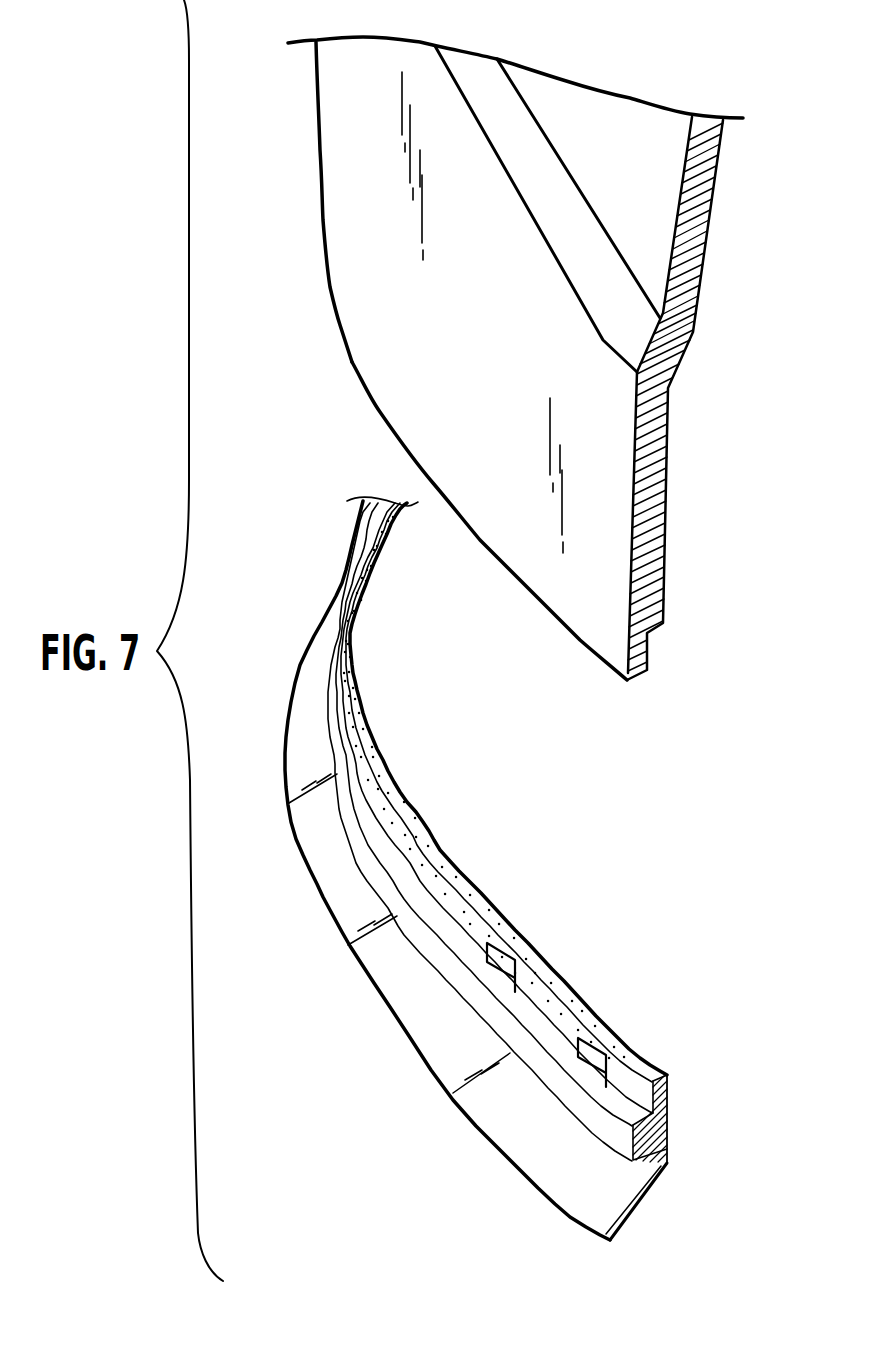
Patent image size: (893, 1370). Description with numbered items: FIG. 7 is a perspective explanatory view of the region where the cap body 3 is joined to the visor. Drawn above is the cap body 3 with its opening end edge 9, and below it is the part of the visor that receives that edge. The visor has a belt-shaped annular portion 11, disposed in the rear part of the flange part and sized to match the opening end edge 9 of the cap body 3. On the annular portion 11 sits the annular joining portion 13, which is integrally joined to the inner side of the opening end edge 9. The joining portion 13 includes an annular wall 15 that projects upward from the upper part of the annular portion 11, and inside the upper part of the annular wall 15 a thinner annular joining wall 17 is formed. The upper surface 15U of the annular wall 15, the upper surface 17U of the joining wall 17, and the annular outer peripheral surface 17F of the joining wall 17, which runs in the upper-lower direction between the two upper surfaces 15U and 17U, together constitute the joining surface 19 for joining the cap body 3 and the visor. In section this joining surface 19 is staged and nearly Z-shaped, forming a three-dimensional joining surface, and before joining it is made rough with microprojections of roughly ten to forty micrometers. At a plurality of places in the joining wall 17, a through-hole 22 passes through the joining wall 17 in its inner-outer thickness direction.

The cap body 3 is at (355, 225).
The opening end edge 9 is at (567, 630).
The annular portion 11 is at (513, 1133).
The joining portion 13 is at (462, 868).
The annular wall 15 is at (612, 1128).
The upper surface of the annular wall 15U is at (610, 1095).
The joining wall 17 is at (667, 1100).
The upper surface of the joining wall 17U is at (643, 1056).
The outer peripheral surface of the joining wall 17F is at (667, 1115).
The joining surface 19 is at (667, 1160).
The through-hole 22 is at (510, 951).